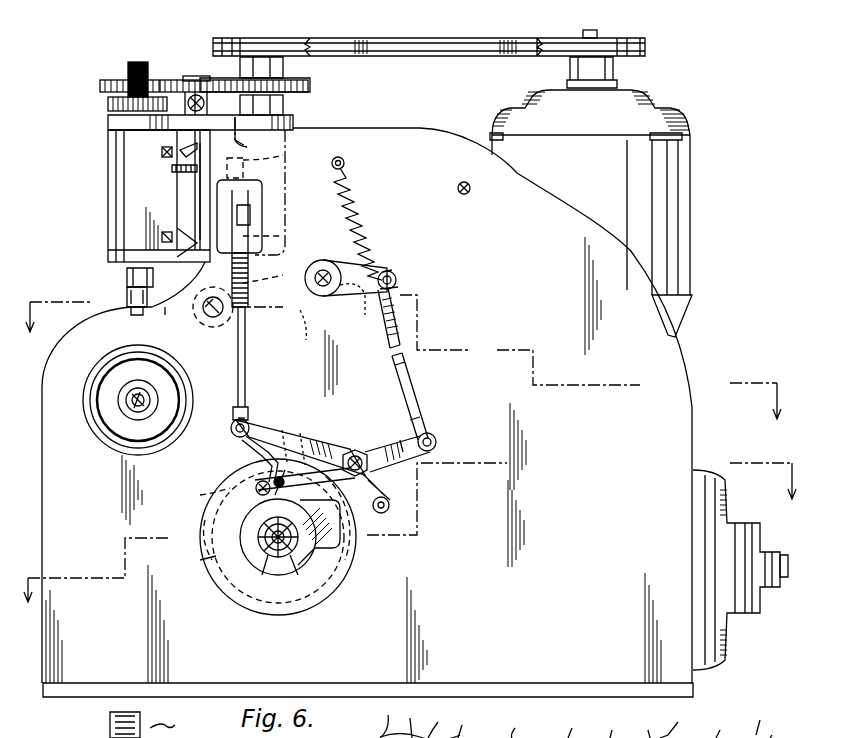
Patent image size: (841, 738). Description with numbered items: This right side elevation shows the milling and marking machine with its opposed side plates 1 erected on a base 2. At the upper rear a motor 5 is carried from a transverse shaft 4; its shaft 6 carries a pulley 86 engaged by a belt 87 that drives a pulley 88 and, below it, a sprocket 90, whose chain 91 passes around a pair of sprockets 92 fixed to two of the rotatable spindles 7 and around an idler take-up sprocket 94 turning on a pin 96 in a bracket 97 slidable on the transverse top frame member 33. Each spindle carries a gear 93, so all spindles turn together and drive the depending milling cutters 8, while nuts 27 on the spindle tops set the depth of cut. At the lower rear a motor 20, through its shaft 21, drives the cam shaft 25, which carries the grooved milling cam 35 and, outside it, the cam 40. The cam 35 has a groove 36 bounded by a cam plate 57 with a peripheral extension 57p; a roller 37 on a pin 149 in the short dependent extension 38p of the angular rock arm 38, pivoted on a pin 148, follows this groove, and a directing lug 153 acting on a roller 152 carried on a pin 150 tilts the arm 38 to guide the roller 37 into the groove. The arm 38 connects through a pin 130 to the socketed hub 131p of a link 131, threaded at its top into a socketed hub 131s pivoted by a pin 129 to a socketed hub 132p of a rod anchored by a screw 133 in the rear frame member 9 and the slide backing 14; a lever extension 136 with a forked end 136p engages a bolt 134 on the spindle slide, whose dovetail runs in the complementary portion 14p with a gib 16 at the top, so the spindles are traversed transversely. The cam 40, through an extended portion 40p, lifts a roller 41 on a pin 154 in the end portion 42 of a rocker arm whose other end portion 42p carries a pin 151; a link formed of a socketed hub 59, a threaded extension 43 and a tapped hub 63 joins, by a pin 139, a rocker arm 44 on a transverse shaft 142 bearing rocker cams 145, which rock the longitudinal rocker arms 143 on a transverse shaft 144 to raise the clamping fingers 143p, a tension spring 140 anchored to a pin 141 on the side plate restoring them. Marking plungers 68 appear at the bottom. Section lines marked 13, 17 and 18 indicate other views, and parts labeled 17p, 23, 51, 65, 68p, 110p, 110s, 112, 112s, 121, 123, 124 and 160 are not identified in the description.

The side plates 1 is at (683, 360).
The base 2 is at (598, 683).
The transverse shaft 4 is at (470, 195).
The motor 5 is at (680, 180).
The shaft 6 is at (597, 33).
The rotatable spindles 7 is at (130, 68).
The milling cutters 8 is at (134, 315).
The rear frame member 9 is at (210, 203).
The hub 13 is at (250, 105).
The slide backing 14 is at (200, 188).
The complementary portion 14p is at (185, 258).
The gib 16 is at (180, 150).
The housing / section line 17 is at (108, 183).
The housing flange 17p is at (108, 124).
The contact block / section line 18 is at (162, 152).
The motor 20 is at (732, 515).
The shaft 21 is at (782, 580).
The fitting 23 is at (152, 284).
The cam shaft 25 is at (278, 546).
The nuts 27 is at (128, 78).
The transverse top frame member 33 is at (255, 136).
The cam 35 is at (222, 590).
The groove 36 is at (200, 495).
The roller 37 is at (262, 458).
The angular rock arm 38 is at (330, 428).
The short dependent extension 38p is at (300, 448).
The cam 40 is at (305, 595).
The extended portion 40p is at (352, 548).
The roller 41 is at (274, 483).
The end portion of rocker arm 42 is at (319, 449).
The other end portion of rocker arm 42p is at (391, 435).
The threaded extension 43 is at (400, 350).
The rocker arm 44 is at (397, 249).
The pulley 51 is at (140, 406).
The cam plate 57 is at (340, 590).
The peripheral extension 57p is at (205, 522).
The socketed hub 59 is at (420, 398).
The tapped hub 63 is at (398, 315).
The part 65 is at (409, 719).
The marking plungers 68 is at (521, 724).
The part 68p is at (617, 724).
The pulley 86 is at (640, 40).
The belt 87 is at (445, 42).
The pulley 88 is at (304, 38).
The sprocket 90 is at (310, 82).
The chain 91 is at (162, 80).
The sprockets 92 is at (100, 82).
The gear 93 is at (108, 104).
The idler take-up sprocket 94 is at (188, 76).
The pin 96 is at (198, 80).
The bracket 97 is at (204, 98).
The part 110p is at (441, 721).
The part 110s is at (681, 719).
The part 112 is at (653, 724).
The part 112s is at (760, 717).
The part 121 is at (648, 725).
The part 123 is at (470, 723).
The part 124 is at (379, 720).
The pin 129 is at (283, 236).
The pin 130 is at (231, 428).
The link 131 is at (245, 368).
The socketed hub 131p is at (235, 412).
The socketed hub 131s is at (245, 300).
The socketed hub 132p is at (250, 214).
The screw 133 is at (262, 205).
The bolt 134 is at (243, 170).
The lever extension 136 is at (262, 190).
The forked end 136p is at (283, 155).
The pin 139 is at (396, 276).
The tension spring 140 is at (370, 204).
The pin 141 is at (344, 160).
The transverse shaft 142 is at (330, 265).
The longitudinal rocker arms 143 is at (303, 330).
The clamping fingers 143p is at (165, 322).
The transverse shaft 144 is at (210, 327).
The rocker cams 145 is at (365, 300).
The pin 148 is at (365, 448).
The pin 149 is at (295, 432).
The pin 150 is at (390, 495).
The pin 151 is at (437, 442).
The roller 152 is at (390, 507).
The directing lug 153 is at (262, 468).
The pin 154 is at (256, 486).
The part 160 is at (783, 729).